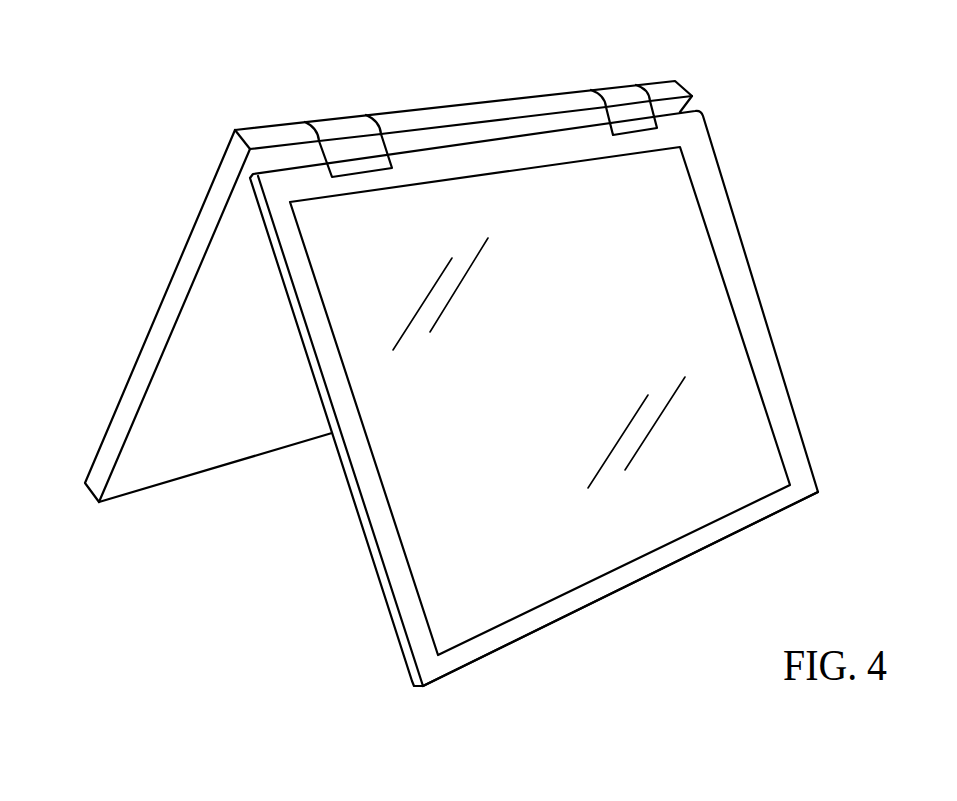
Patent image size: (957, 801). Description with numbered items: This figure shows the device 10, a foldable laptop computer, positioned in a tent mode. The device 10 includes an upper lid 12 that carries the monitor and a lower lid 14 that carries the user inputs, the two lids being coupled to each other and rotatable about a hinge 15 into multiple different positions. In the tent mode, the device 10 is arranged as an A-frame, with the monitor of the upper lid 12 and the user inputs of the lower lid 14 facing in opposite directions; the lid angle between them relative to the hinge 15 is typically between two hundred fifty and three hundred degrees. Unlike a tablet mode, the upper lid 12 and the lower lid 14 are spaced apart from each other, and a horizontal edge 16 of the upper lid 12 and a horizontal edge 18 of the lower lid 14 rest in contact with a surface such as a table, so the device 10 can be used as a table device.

The device 10 is at (128, 110).
The upper lid 12 is at (737, 268).
The lower lid 14 is at (180, 288).
The hinge 15 is at (622, 95).
The horizontal edge of the upper lid 16 is at (597, 617).
The horizontal edge of the lower lid 18 is at (222, 482).